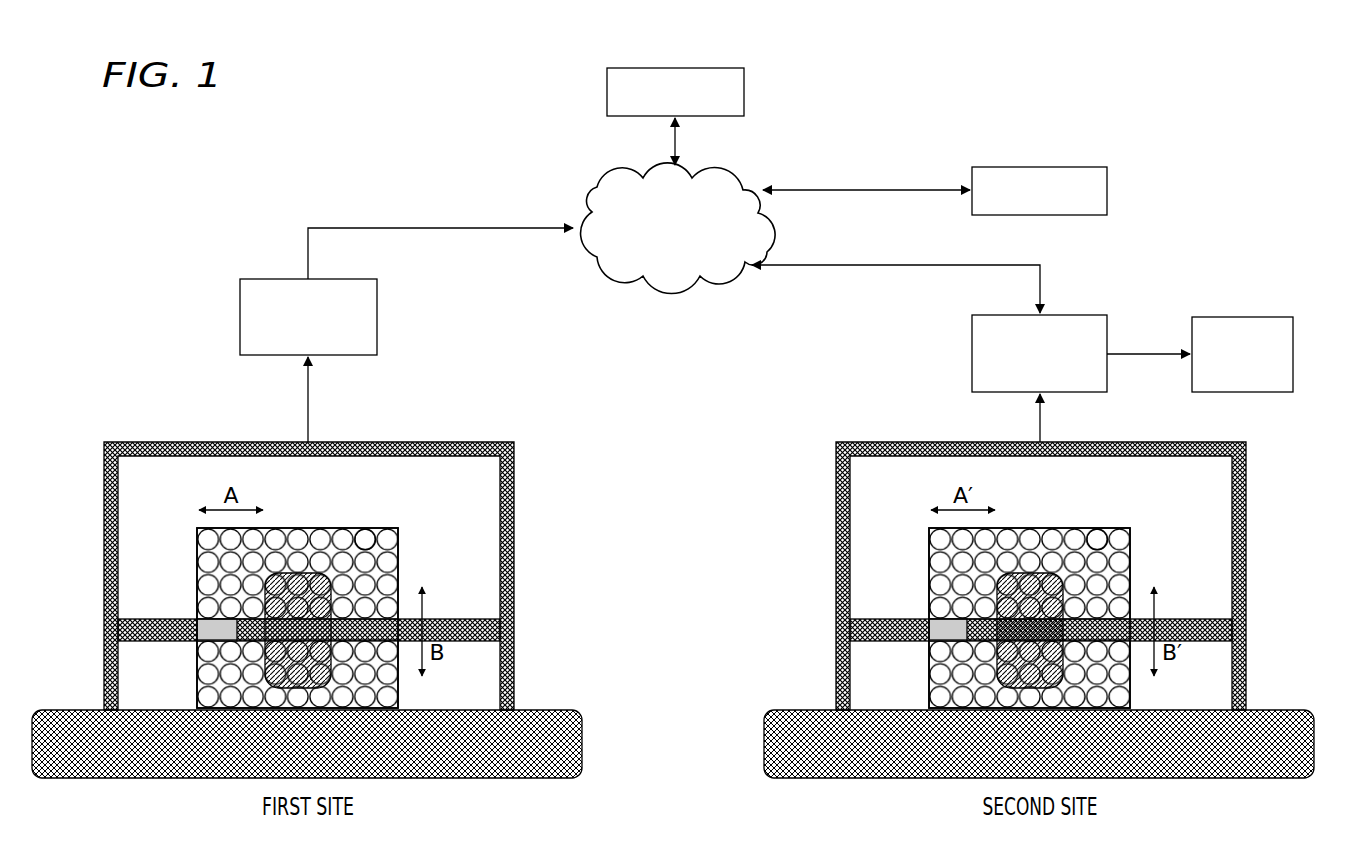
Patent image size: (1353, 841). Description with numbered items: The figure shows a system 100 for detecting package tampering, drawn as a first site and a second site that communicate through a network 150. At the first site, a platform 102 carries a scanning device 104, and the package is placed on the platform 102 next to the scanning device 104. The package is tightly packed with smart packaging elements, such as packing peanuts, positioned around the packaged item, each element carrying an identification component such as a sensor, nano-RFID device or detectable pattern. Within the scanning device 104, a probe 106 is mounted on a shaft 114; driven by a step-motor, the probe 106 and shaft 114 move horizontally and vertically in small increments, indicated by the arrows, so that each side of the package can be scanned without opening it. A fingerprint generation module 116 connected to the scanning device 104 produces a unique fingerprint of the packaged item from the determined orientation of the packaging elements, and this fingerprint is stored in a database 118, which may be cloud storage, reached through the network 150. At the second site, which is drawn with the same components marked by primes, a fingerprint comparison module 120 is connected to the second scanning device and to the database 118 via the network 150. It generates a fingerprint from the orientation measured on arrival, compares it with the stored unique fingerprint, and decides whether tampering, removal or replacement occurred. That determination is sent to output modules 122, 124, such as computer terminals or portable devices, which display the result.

The system 100 is at (174, 133).
The platform 102 is at (303, 727).
The scanning device 104 is at (276, 576).
The probe 106 is at (186, 611).
The shaft 114 is at (347, 629).
The fingerprint generation module 116 is at (283, 279).
The database 118 is at (690, 68).
The fingerprint comparison module 120 is at (1068, 315).
The output module 122 is at (1238, 317).
The output module 124 is at (1043, 167).
The network 150 is at (594, 188).